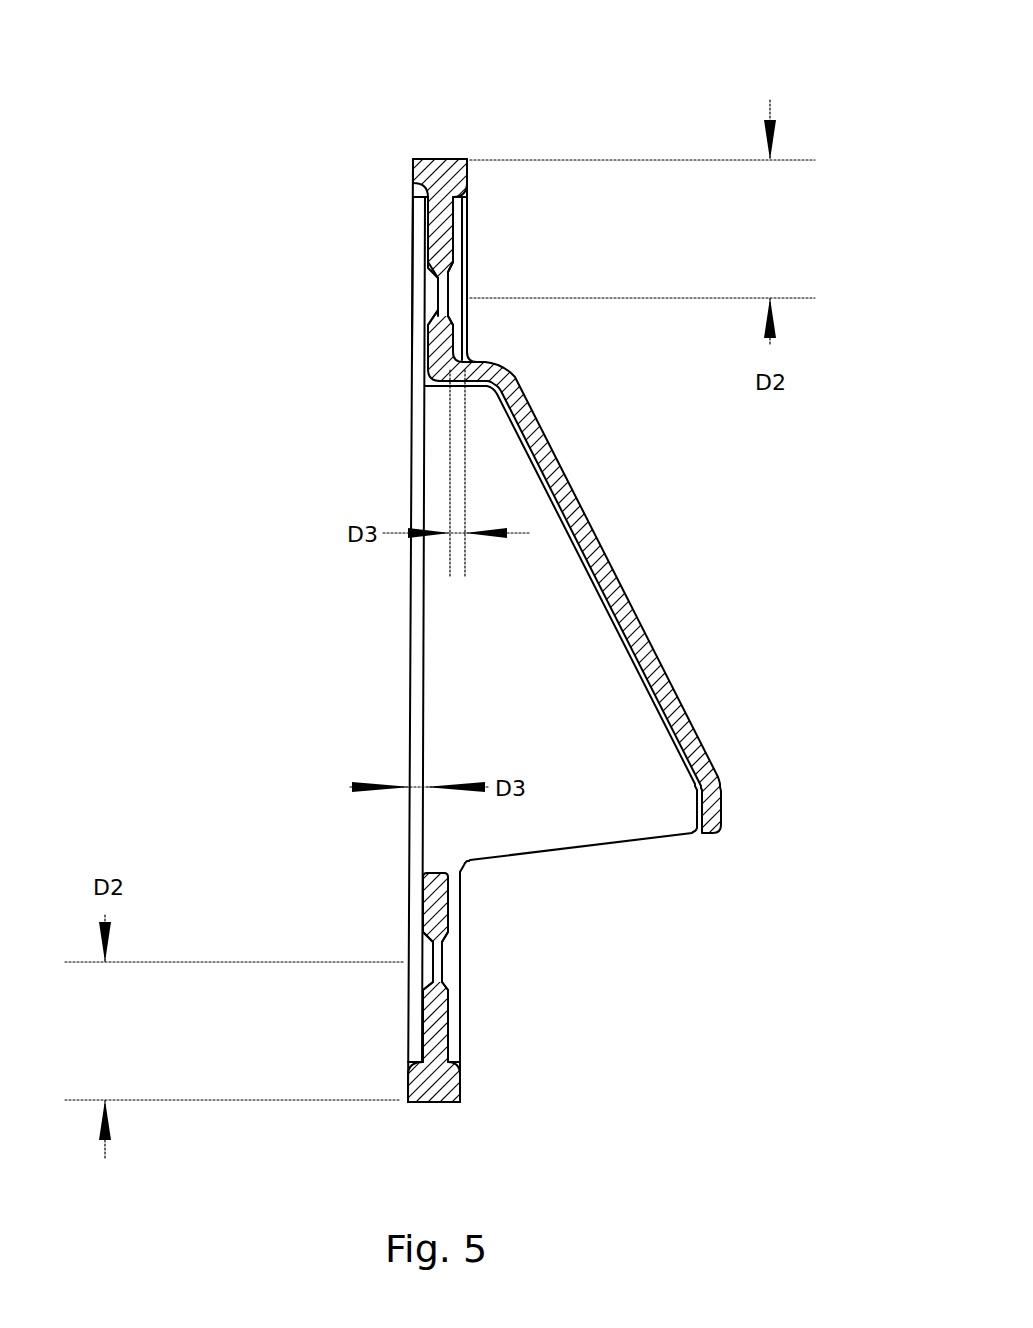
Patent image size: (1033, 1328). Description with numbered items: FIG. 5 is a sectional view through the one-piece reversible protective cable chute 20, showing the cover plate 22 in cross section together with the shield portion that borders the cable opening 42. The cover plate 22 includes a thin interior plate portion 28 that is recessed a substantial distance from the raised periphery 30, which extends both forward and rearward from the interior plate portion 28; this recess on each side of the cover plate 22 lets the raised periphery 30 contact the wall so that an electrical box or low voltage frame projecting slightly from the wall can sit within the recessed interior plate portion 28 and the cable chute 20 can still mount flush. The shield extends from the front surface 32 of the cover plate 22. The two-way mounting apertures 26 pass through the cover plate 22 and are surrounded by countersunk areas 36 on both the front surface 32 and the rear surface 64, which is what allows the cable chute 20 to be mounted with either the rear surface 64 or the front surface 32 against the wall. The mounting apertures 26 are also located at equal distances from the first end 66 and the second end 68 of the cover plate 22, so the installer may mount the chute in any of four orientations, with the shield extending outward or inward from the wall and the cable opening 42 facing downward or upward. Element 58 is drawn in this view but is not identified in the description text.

The protective cable chute 20 is at (188, 222).
The cover plate 22 is at (468, 163).
The two-way mounting apertures 26 is at (440, 295).
The interior plate portion 28 is at (427, 343).
The raised periphery 30 is at (413, 171).
The front surface 32 is at (463, 338).
The countersunk areas 36 is at (435, 310).
The cable opening 42 is at (607, 817).
The bottom wall 58 is at (577, 845).
The rear surface 64 is at (413, 229).
The first end 66 is at (439, 159).
The second end 68 is at (433, 1103).